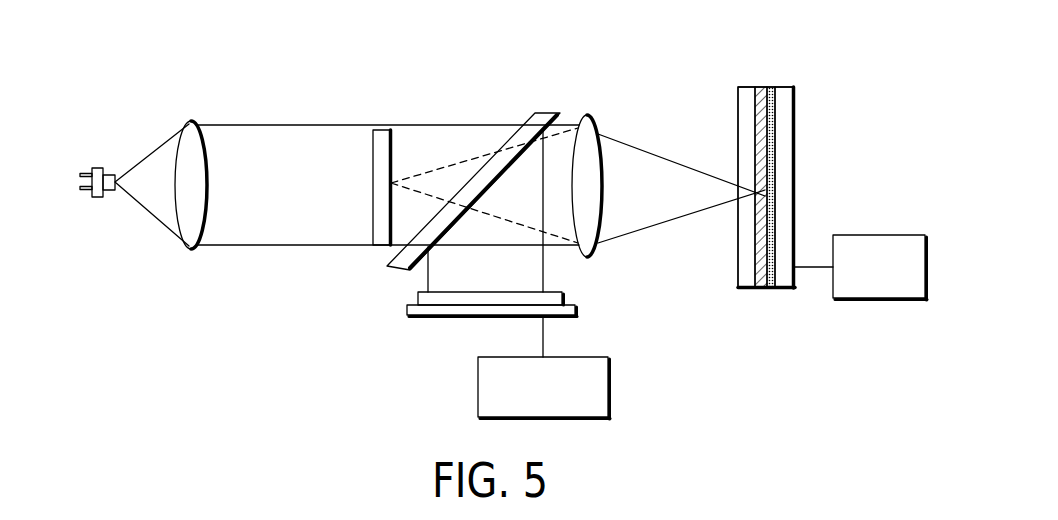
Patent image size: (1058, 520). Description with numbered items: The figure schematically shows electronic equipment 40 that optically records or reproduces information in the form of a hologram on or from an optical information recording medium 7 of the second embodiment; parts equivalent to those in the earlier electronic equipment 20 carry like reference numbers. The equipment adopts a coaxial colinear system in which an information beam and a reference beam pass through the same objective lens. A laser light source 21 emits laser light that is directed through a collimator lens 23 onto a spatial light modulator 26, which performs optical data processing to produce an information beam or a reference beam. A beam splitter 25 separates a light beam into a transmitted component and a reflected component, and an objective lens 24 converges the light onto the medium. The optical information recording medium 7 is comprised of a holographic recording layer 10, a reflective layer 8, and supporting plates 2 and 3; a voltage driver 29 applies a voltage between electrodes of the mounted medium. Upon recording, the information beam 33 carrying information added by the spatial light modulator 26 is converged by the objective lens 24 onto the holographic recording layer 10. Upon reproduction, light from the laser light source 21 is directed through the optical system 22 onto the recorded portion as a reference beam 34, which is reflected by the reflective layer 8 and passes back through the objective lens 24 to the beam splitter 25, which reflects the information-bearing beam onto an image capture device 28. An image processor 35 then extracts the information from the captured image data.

The supporting plate 2 is at (747, 86).
The supporting plate 3 is at (795, 110).
The optical information recording medium 7 is at (814, 180).
The reflective layer 8 is at (772, 288).
The holographic recording layer 10 is at (763, 86).
The electronic equipment 20 is at (355, 285).
The laser light source 21 is at (98, 168).
The optical system 22 is at (212, 265).
The collimator lens 23 is at (192, 121).
The objective lens 24 is at (586, 115).
The beam splitter 25 is at (541, 113).
The spatial light modulator 26 is at (383, 130).
The image capture device 28 is at (458, 318).
The voltage driver 29 is at (882, 235).
The information beam 33 is at (681, 209).
The reference beam 34 is at (662, 222).
The image processor 35 is at (610, 388).
The electronic equipment 40 is at (112, 235).